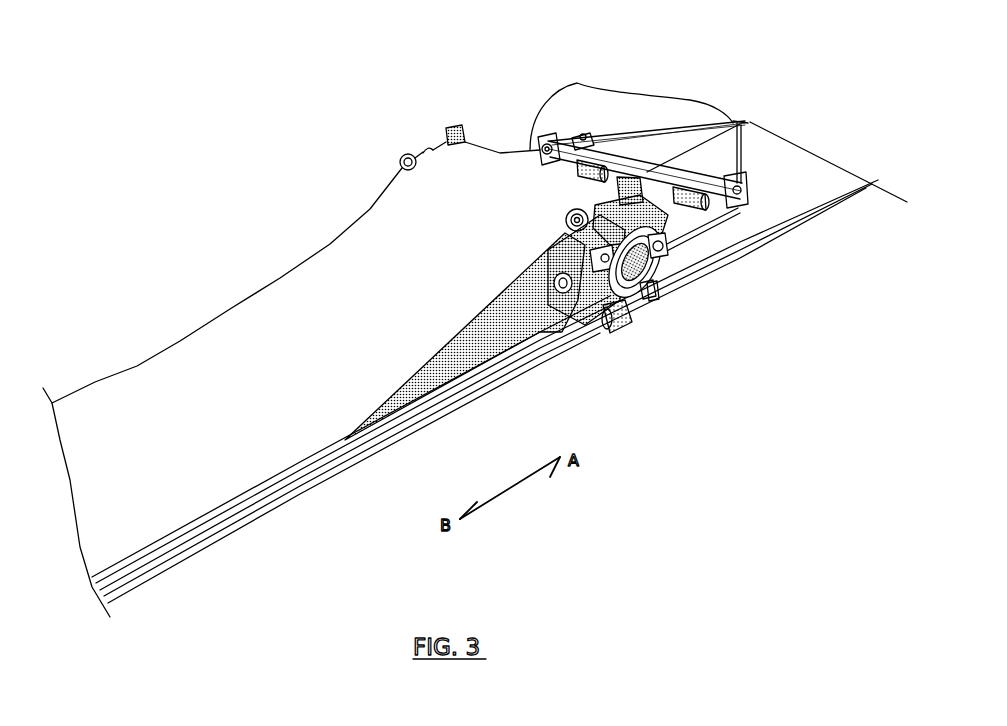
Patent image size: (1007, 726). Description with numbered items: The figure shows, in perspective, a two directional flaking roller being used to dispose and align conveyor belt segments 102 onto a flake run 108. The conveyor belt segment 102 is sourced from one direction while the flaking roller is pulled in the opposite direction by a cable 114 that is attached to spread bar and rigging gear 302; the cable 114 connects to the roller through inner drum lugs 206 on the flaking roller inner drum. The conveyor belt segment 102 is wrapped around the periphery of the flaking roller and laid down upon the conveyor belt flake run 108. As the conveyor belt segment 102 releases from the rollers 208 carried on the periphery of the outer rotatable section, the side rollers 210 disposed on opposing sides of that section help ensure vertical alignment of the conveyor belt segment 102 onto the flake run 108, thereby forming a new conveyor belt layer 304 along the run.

The conveyor belt segment 102 is at (378, 287).
The flake run 108 is at (740, 253).
The cable 114 is at (740, 123).
The inner drum lugs 206 is at (662, 262).
The rollers 208 is at (550, 327).
The side rollers 210 is at (607, 327).
The spread bar and rigging gear 302 is at (577, 83).
The new conveyor belt layer 304 is at (465, 336).